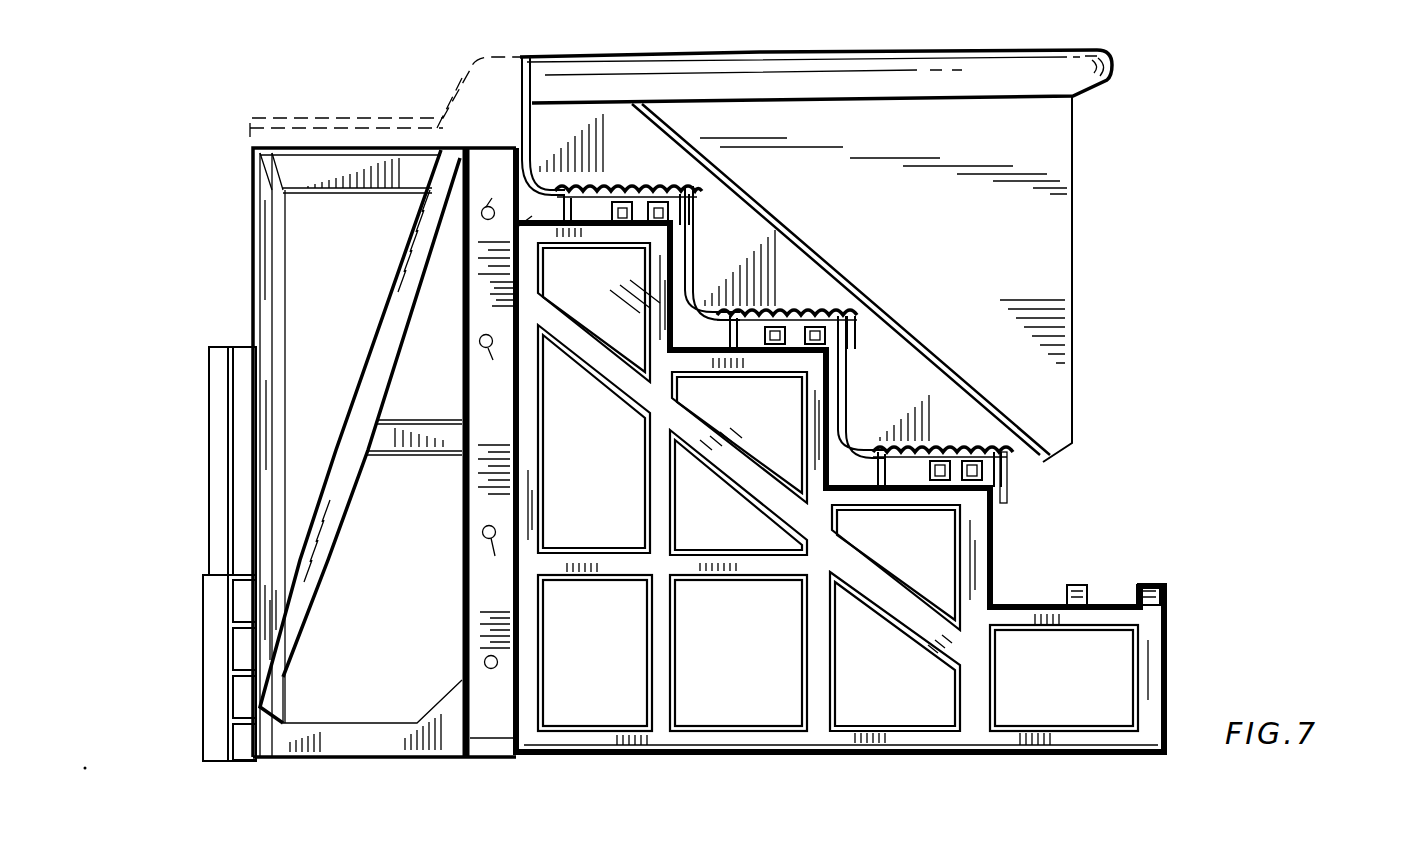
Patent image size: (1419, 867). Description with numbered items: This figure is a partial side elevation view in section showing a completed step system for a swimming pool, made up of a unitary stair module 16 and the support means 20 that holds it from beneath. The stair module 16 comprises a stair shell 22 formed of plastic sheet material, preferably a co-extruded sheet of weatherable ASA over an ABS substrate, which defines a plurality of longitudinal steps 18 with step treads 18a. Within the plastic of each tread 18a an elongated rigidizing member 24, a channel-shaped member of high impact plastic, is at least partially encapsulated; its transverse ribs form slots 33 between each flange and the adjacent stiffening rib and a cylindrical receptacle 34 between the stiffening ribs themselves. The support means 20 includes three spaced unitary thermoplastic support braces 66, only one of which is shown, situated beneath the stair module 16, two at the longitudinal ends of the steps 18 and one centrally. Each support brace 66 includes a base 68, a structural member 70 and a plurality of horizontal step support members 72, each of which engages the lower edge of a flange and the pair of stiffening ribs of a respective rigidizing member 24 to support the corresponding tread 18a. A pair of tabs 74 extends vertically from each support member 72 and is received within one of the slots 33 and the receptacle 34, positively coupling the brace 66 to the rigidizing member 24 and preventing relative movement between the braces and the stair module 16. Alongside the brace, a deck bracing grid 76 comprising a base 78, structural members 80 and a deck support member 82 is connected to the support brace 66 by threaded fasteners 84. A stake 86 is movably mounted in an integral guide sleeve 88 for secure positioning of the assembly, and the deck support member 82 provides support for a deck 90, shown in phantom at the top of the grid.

The unitary stair module 16 is at (1060, 12).
The longitudinal steps 18 is at (714, 193).
The step treads 18a is at (640, 183).
The support means 20 is at (1122, 486).
The stair shell 22 is at (927, 370).
The rigidizing members 24 is at (657, 178).
The slots 33 is at (690, 207).
The cylindrical receptacle 34 is at (625, 185).
The support braces 66 is at (1180, 658).
The base 68 is at (907, 727).
The structural member 70 is at (597, 556).
The horizontal step support members 72 is at (627, 250).
The tabs 74 is at (612, 232).
The deck bracing grid 76 is at (246, 229).
The base 78 is at (375, 707).
The structural members 80 is at (390, 322).
The deck support member 82 is at (388, 178).
The threaded fasteners 84 is at (495, 656).
The stake 86 is at (215, 458).
The integral guide sleeve 88 is at (222, 640).
The deck 90 is at (363, 118).